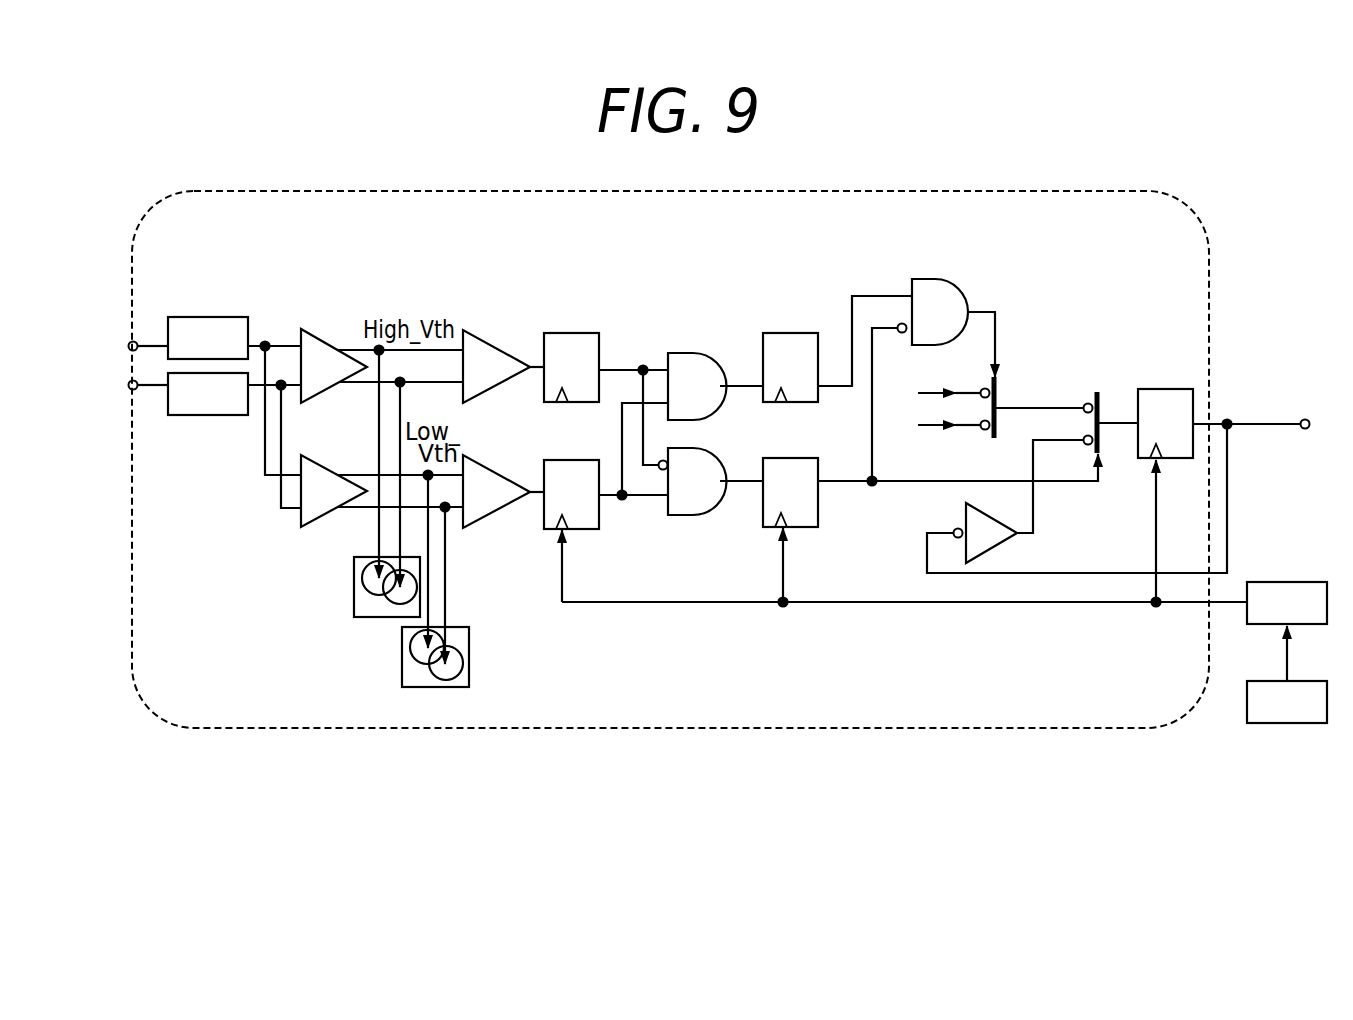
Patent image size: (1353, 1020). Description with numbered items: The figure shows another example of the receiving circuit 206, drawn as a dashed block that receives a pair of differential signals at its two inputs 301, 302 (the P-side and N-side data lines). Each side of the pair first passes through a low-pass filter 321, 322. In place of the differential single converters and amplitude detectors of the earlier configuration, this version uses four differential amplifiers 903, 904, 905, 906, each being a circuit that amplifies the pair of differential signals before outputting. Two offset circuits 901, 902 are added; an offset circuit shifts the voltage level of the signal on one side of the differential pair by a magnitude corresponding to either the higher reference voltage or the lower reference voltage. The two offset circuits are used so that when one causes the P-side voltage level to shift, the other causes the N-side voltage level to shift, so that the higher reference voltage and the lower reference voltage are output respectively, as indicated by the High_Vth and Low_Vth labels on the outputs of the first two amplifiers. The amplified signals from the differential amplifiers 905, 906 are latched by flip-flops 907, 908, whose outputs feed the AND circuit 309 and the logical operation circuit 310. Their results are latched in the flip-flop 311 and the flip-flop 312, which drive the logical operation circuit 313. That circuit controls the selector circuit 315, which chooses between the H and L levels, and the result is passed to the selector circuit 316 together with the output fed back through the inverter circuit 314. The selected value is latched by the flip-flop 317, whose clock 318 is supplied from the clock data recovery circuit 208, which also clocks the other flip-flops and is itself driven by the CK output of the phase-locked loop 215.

The receiving circuit 206 is at (1067, 191).
The clock data recovery circuit 208 is at (1295, 582).
The phase-locked loop 215 is at (1288, 723).
The Data_P input terminal 301 is at (80, 330).
The Data_N input terminal 302 is at (80, 403).
The AND circuit 309 is at (683, 353).
The logical operation circuit 310 is at (690, 515).
The flip-flop 311 is at (790, 333).
The flip-flop 312 is at (830, 513).
The logical operation circuit 313 is at (943, 279).
The inverter circuit 314 is at (990, 548).
The selector circuit 315 is at (1000, 381).
The selector circuit 316 is at (1100, 392).
The flip-flop 317 is at (1170, 389).
The clock 318 is at (1155, 520).
The low-pass filter 321 is at (204, 317).
The low-pass filter 322 is at (207, 415).
The offset circuit 901 is at (368, 617).
The offset circuit 902 is at (469, 660).
The differential amplifier 903 is at (312, 329).
The differential amplifier 904 is at (299, 525).
The differential amplifier 905 is at (480, 330).
The differential amplifier 906 is at (490, 523).
The flip-flop 907 is at (570, 333).
The flip-flop 908 is at (580, 529).